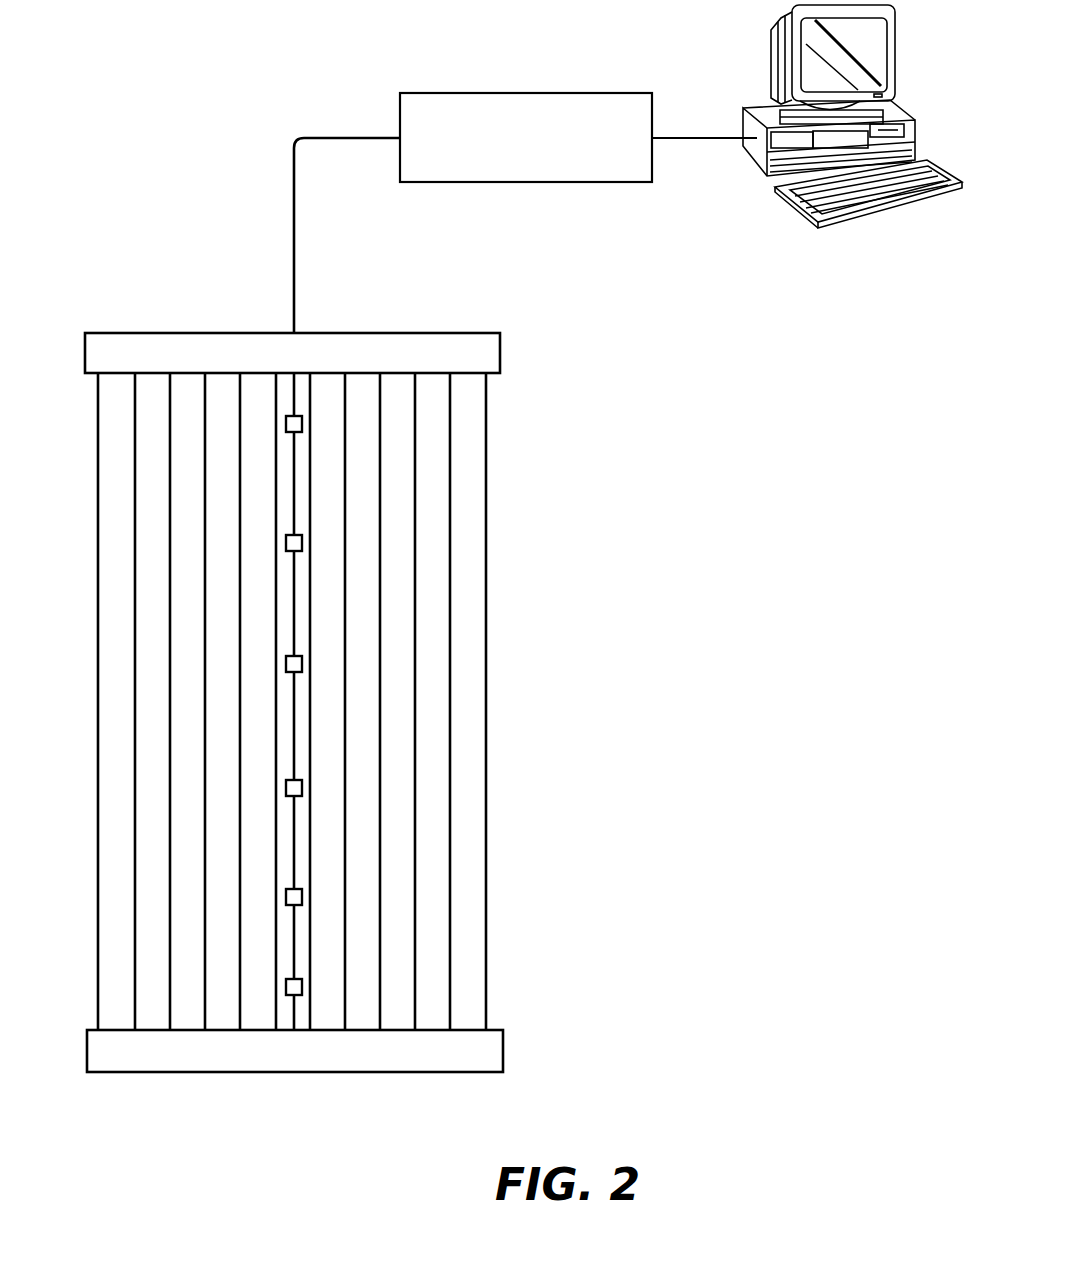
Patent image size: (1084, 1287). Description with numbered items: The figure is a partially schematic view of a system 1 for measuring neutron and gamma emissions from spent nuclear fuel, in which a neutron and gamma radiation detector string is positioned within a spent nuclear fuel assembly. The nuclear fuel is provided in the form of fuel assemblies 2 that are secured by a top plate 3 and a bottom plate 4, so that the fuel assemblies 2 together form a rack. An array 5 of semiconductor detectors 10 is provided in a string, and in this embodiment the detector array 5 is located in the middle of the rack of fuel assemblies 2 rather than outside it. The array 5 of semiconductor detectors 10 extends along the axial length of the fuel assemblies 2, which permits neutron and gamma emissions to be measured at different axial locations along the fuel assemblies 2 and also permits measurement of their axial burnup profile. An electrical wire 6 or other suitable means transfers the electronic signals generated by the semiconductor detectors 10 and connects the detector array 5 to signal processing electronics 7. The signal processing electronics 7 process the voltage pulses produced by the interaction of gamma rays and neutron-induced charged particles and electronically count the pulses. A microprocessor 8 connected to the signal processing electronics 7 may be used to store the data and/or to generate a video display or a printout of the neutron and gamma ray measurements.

The system 1 is at (150, 285).
The fuel assembly 2 is at (487, 524).
The top plate 3 is at (491, 354).
The bottom plate 4 is at (504, 1048).
The array of semiconductor detectors 5 is at (306, 668).
The electrical wire 6 is at (296, 258).
The signal processing electronics 7 is at (520, 93).
The microprocessor 8 is at (874, 42).
The semiconductor detector 10 is at (294, 996).